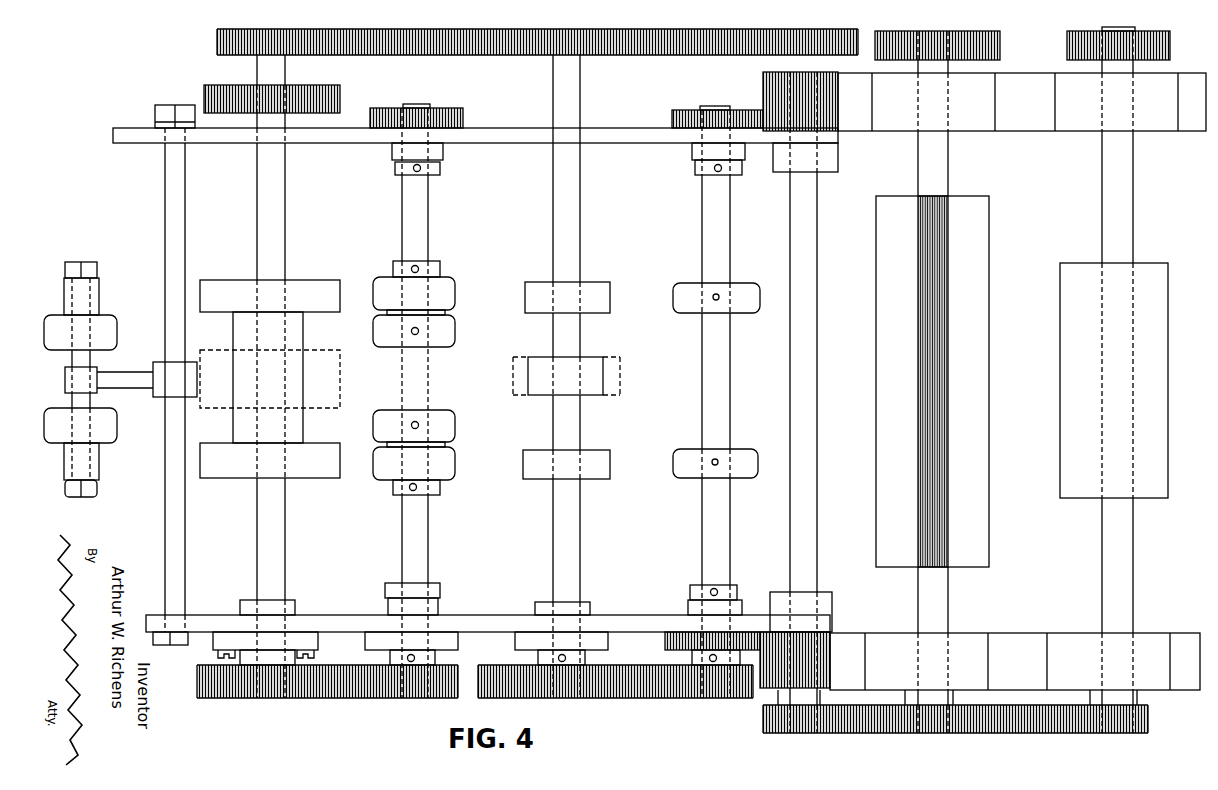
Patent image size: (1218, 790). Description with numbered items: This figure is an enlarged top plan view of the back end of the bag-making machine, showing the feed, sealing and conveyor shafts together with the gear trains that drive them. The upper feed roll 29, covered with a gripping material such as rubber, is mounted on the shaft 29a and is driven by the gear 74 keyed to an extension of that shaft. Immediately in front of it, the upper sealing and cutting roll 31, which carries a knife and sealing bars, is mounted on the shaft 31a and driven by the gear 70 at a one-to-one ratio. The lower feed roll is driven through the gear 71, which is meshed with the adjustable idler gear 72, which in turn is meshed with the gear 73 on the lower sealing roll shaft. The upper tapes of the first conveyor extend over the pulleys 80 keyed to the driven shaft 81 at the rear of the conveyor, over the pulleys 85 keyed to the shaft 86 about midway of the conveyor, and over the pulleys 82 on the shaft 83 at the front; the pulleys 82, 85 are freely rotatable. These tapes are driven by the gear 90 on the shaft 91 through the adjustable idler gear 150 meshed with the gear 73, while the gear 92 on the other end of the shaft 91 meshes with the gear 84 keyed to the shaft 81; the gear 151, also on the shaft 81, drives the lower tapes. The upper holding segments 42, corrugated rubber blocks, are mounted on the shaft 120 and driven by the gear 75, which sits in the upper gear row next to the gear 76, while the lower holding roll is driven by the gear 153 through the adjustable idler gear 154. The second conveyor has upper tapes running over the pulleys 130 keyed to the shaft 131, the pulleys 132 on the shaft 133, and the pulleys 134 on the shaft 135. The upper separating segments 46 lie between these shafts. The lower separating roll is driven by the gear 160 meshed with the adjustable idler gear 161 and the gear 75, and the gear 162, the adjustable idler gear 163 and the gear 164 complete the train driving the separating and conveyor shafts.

The gear 160 is at (318, 24).
The adjustable idler gear 161 is at (407, 29).
The gear 75 is at (600, 29).
The gear 76 is at (692, 29).
The gear 70 is at (978, 31).
The gear 74 is at (1140, 31).
The gear 84 is at (683, 110).
The gear 92 is at (765, 106).
The shaft 133 is at (285, 176).
The pulleys 132 is at (322, 280).
The upper separating segments 46 is at (350, 378).
The pulleys 134 is at (112, 318).
The shaft 135 is at (96, 357).
The transverse shaft 131 is at (428, 190).
The shaft 83 is at (428, 223).
The pulleys 82 is at (455, 290).
The pulleys 130 is at (455, 331).
The shaft 86 is at (572, 201).
The pulleys 85 is at (605, 283).
The upper holding segments 42 is at (598, 383).
The shaft 120 is at (581, 413).
The driven shaft 81 is at (730, 516).
The pulleys 80 is at (752, 285).
The shaft 91 is at (817, 528).
The gear 90 is at (777, 733).
The shaft 31a is at (948, 161).
The upper sealing and cutting roll 31 is at (989, 234).
The shaft 29a is at (1133, 175).
The upper feed roll 29 is at (1160, 263).
The gear 164 is at (268, 698).
The adjustable idler gear 163 is at (352, 698).
The gear 162 is at (408, 698).
The gear 153 is at (600, 698).
The adjustable idler gear 154 is at (655, 698).
The gear 151 is at (692, 698).
The adjustable idler gear 150 is at (858, 733).
The gear 73 is at (897, 733).
The adjustable idler gear 72 is at (1012, 733).
The gear 71 is at (1110, 733).